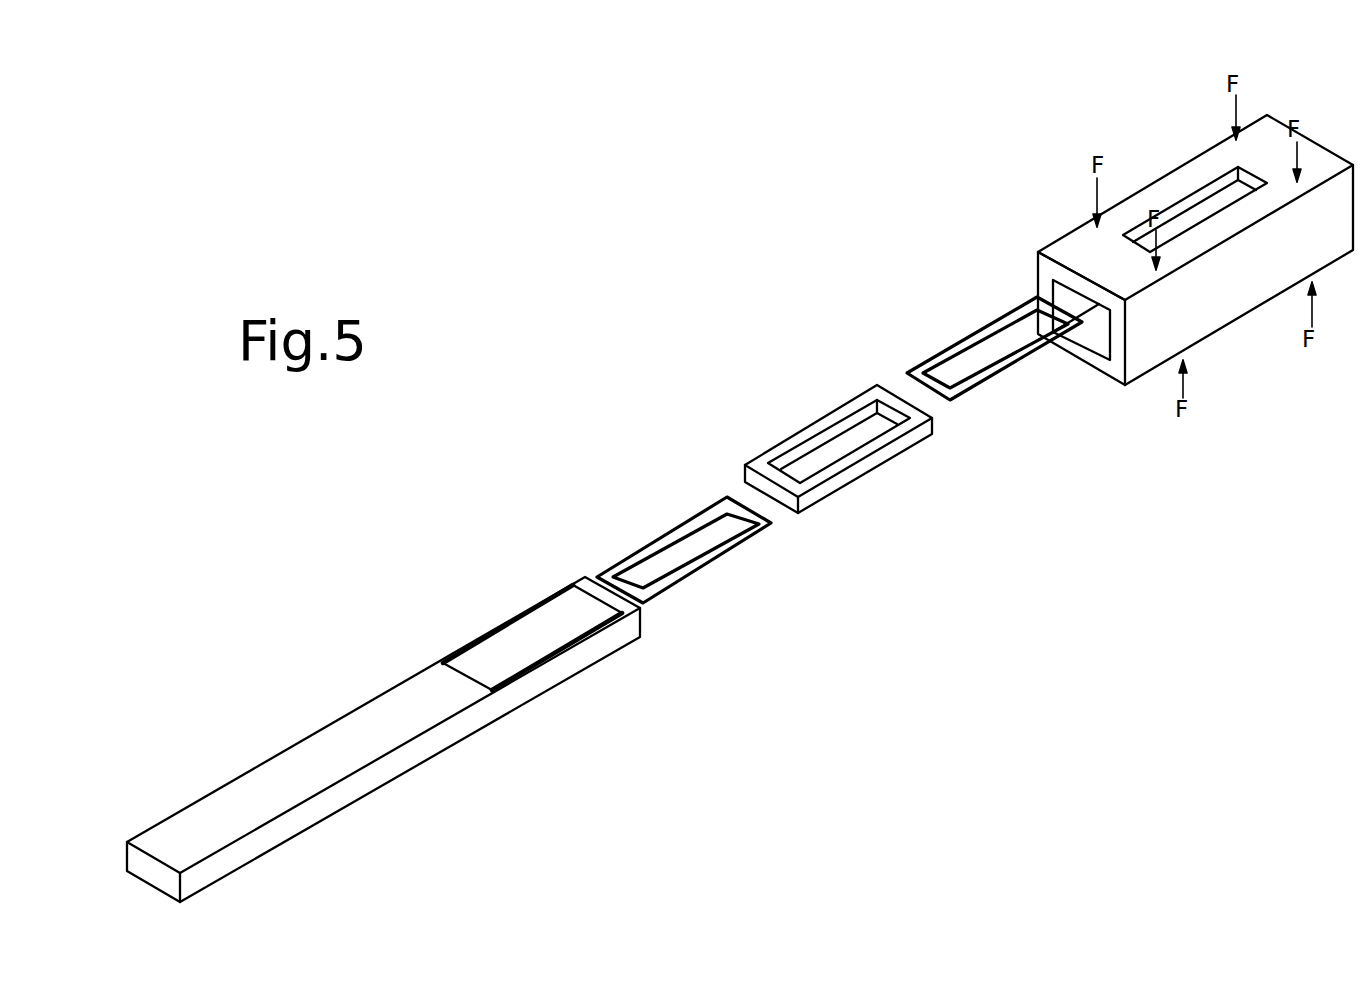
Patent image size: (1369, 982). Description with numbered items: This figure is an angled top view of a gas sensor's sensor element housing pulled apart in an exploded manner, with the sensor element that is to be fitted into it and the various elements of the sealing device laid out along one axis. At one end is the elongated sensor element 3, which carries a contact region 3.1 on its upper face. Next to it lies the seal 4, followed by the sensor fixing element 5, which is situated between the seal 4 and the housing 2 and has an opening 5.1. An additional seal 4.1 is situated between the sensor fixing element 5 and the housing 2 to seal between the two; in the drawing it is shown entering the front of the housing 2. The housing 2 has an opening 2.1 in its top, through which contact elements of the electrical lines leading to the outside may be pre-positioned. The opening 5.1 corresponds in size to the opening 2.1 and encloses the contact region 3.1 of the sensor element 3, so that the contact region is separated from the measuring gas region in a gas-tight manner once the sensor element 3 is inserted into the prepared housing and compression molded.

The housing 2 is at (1195, 228).
The opening 2.1 is at (1227, 141).
The sensor element 3 is at (383, 724).
The contact region 3.1 is at (545, 558).
The seal 4 is at (684, 458).
The additional seal 4.1 is at (994, 269).
The sensor fixing element 5 is at (838, 353).
The opening 5.1 is at (848, 383).